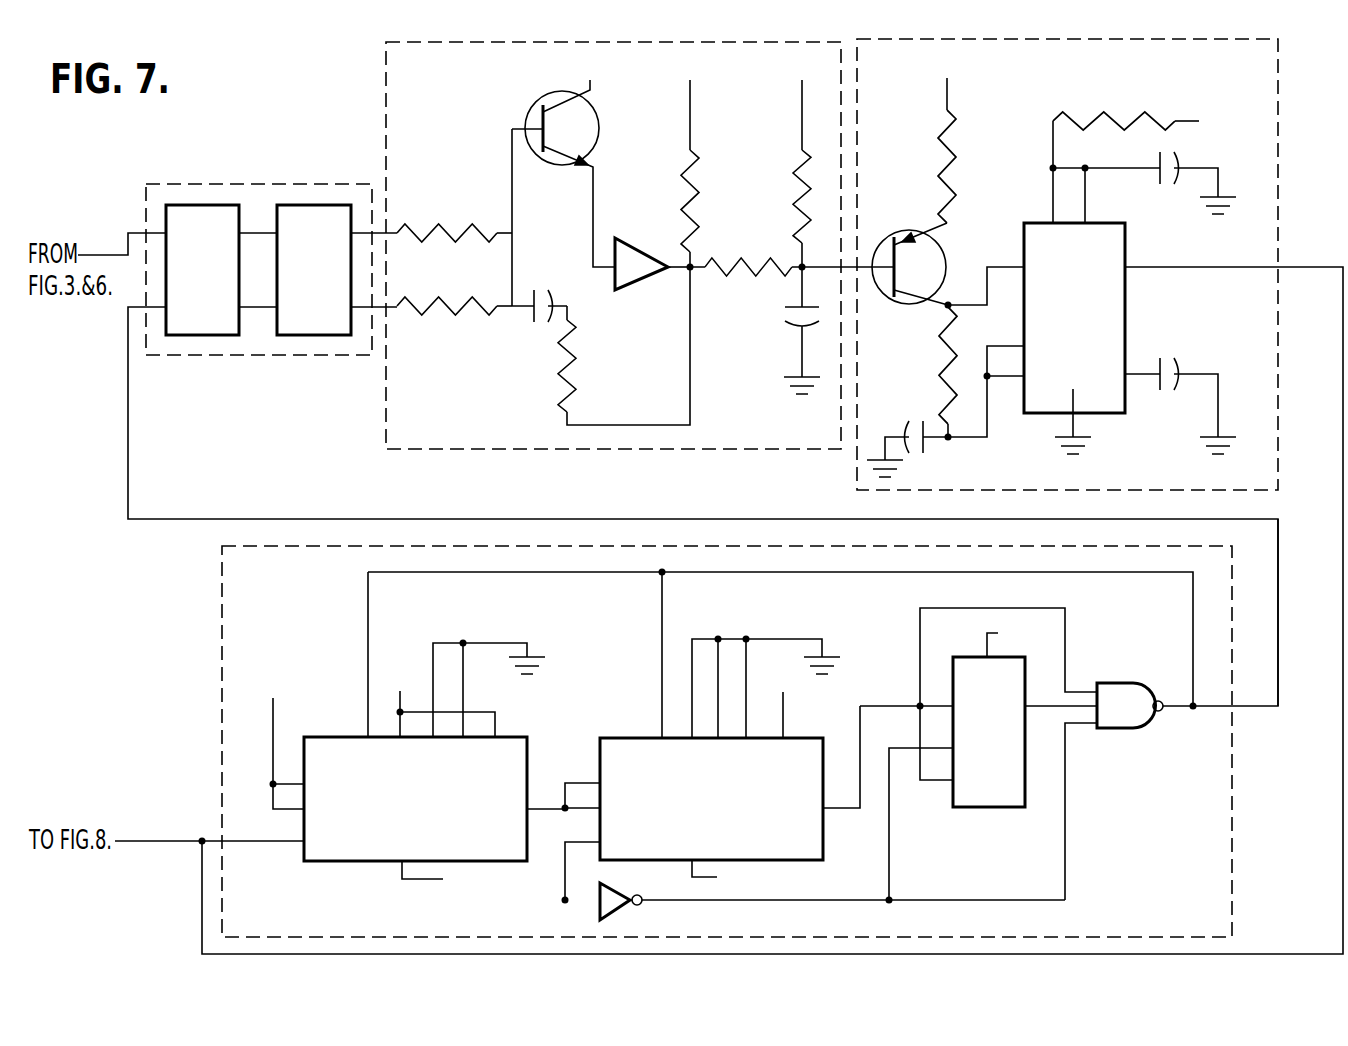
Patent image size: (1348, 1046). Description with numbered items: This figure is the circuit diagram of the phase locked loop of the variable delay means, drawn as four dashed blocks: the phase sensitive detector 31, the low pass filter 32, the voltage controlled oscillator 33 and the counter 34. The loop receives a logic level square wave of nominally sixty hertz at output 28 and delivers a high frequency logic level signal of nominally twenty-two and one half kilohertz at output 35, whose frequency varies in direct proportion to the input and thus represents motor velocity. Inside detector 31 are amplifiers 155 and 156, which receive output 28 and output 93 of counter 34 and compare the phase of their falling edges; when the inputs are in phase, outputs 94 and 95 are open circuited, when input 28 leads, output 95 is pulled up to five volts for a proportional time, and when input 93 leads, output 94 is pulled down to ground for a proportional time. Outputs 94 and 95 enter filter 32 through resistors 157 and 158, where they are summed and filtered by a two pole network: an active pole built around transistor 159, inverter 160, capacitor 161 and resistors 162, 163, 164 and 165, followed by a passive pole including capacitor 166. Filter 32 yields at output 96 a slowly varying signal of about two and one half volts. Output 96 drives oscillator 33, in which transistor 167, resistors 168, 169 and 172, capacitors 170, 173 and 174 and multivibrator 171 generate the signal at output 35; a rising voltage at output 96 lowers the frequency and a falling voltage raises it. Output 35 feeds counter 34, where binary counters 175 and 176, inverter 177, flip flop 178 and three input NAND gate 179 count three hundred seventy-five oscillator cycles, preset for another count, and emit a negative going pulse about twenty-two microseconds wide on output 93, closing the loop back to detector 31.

The output of frequency detecting means 28 is at (127, 234).
The phase sensitive detector 31 is at (215, 184).
The low pass filter 32 is at (385, 73).
The voltage controlled oscillator 33 is at (1279, 130).
The counter 34 is at (222, 585).
The oscillator output 35 is at (1316, 265).
The counter output 93 is at (688, 519).
The detector output 94 is at (378, 230).
The detector output 95 is at (382, 312).
The filter output 96 is at (840, 269).
The amplifier 155 is at (185, 290).
The amplifier 156 is at (297, 272).
The resistor 157 is at (417, 229).
The resistor 158 is at (458, 300).
The transistor 159 is at (600, 123).
The inverter 160 is at (646, 246).
The capacitor 161 is at (538, 287).
The resistor 162 is at (553, 378).
The resistor 163 is at (684, 180).
The resistor 164 is at (768, 258).
The resistor 165 is at (790, 170).
The capacitor 166 is at (785, 313).
The transistor 167 is at (946, 256).
The resistor 168 is at (938, 164).
The resistor 169 is at (930, 360).
The capacitor 170 is at (918, 418).
The multivibrator 171 is at (1051, 316).
The resistor 172 is at (1110, 106).
The capacitor 173 is at (1158, 150).
The capacitor 174 is at (1173, 352).
The binary counter 175 is at (430, 840).
The binary counter 176 is at (725, 838).
The inverter 177 is at (600, 907).
The J-K flip/flop 178 is at (982, 789).
The 3 input NAND 179 is at (1105, 719).